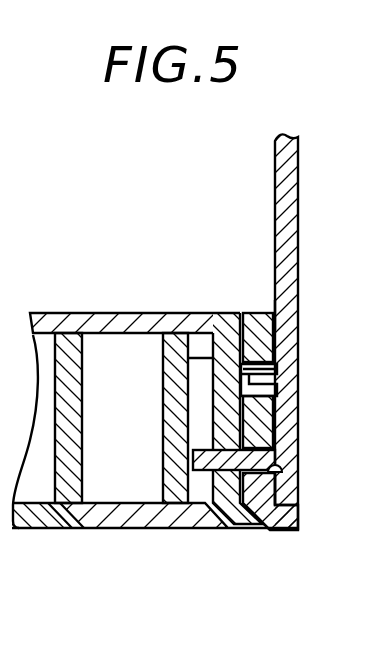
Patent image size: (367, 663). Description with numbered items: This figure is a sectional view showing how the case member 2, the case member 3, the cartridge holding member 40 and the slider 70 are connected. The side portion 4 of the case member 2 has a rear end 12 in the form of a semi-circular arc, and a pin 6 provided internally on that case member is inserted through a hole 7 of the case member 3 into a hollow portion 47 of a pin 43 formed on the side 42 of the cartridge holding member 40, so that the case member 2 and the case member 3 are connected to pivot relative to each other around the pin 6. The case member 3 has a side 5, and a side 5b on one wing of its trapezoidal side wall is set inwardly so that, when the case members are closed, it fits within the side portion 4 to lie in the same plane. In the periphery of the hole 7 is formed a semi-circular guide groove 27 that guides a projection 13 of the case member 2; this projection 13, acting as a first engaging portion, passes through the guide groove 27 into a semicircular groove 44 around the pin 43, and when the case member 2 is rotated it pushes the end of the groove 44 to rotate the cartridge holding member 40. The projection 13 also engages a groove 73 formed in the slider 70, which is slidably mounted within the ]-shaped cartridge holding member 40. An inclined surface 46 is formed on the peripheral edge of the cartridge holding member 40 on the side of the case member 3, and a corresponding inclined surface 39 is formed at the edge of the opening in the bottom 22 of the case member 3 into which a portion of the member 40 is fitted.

The case member 2 is at (275, 170).
The side portion 4 is at (278, 218).
The side 5b is at (272, 312).
The case member 3 is at (260, 345).
The pin 43 is at (262, 372).
The hollow portion 47 is at (266, 389).
The hole 7 is at (270, 402).
The cartridge holding member 40 is at (106, 328).
The slider 70 is at (67, 345).
The side 42 is at (190, 423).
The pin 6 is at (200, 387).
The groove 73 is at (197, 355).
The projection 13 is at (200, 462).
The groove 44 is at (229, 492).
The inclined surface 46 is at (250, 512).
The side 5 is at (284, 516).
The guide groove 27 is at (298, 498).
The rear end 12 is at (290, 468).
The bottom 22 is at (40, 503).
The inclined surface 39 is at (72, 518).